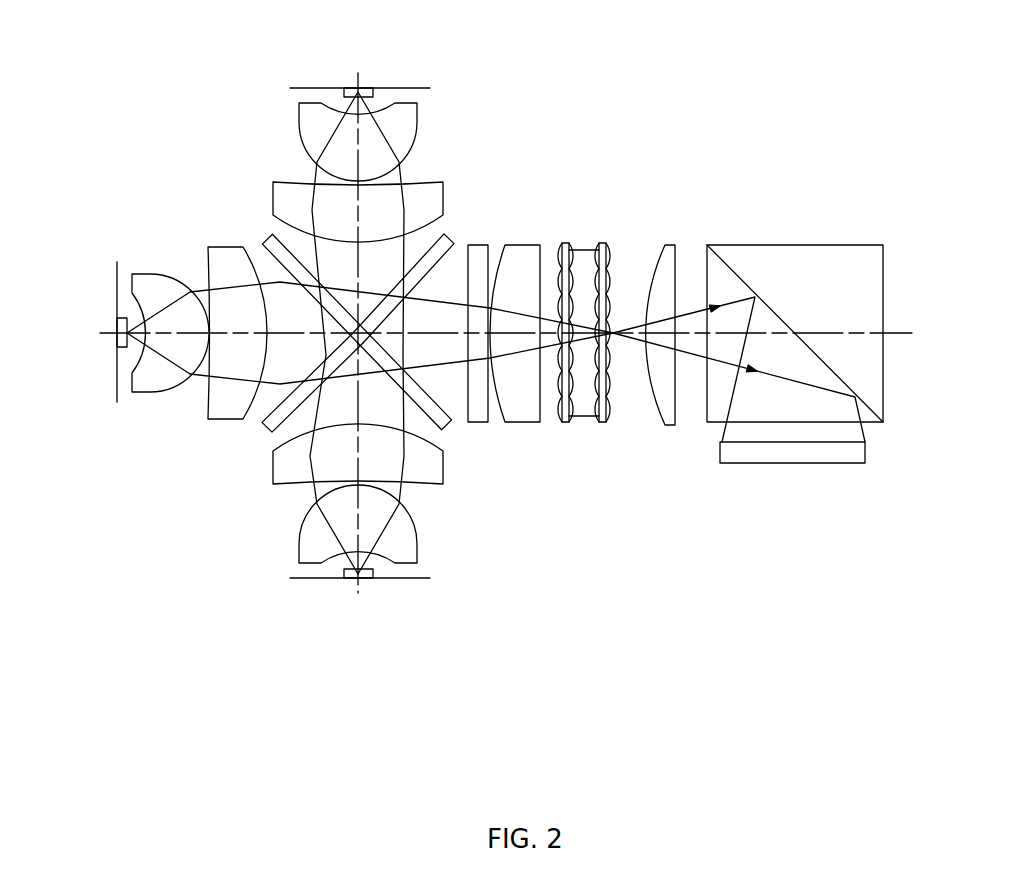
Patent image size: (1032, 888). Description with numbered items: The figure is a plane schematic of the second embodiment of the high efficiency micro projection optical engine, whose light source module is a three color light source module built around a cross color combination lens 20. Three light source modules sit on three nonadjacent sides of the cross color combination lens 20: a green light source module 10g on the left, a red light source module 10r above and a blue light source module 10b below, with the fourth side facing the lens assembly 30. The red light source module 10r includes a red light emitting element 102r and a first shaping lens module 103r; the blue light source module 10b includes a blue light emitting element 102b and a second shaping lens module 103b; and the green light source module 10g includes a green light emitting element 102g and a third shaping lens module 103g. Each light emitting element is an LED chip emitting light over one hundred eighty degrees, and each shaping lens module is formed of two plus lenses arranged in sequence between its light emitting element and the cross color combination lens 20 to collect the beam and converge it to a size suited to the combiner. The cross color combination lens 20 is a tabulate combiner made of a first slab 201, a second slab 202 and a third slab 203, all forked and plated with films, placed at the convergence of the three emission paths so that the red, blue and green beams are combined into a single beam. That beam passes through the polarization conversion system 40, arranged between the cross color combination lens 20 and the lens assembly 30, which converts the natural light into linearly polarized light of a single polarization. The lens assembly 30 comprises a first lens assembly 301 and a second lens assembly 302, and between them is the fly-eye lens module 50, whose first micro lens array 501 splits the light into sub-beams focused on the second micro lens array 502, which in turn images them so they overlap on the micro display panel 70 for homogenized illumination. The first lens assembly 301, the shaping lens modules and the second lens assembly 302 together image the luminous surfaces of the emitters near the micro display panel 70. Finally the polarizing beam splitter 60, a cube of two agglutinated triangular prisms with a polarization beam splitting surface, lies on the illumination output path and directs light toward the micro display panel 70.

The green light source module 10g is at (203, 187).
The green light emitting element 102g is at (125, 325).
The third shaping lens module 103g is at (235, 238).
The red light source module 10r is at (525, 30).
The red light emitting element 102r is at (375, 92).
The first shaping lens module 103r is at (452, 110).
The blue light source module 10b is at (523, 518).
The blue light emitting element 102b is at (372, 573).
The second shaping lens module 103b is at (447, 465).
The cross color combination lens 20 is at (255, 433).
The first slab 201 is at (265, 233).
The second slab 202 is at (452, 233).
The third slab 203 is at (283, 397).
The lens assembly 30 is at (732, 144).
The first lens assembly 301 is at (538, 243).
The second lens assembly 302 is at (668, 243).
The polarization conversion system 40 is at (475, 422).
The fly-eye lens module 50 is at (712, 487).
The first micro lens array 501 is at (565, 420).
The second micro lens array 502 is at (607, 387).
The polarizing beam splitter 60 is at (818, 245).
The micro display panel 70 is at (815, 465).